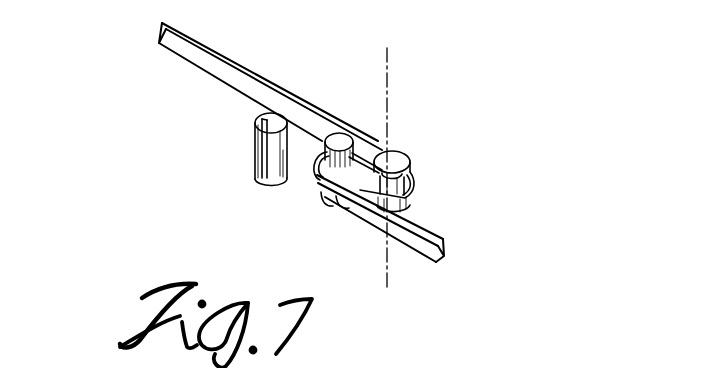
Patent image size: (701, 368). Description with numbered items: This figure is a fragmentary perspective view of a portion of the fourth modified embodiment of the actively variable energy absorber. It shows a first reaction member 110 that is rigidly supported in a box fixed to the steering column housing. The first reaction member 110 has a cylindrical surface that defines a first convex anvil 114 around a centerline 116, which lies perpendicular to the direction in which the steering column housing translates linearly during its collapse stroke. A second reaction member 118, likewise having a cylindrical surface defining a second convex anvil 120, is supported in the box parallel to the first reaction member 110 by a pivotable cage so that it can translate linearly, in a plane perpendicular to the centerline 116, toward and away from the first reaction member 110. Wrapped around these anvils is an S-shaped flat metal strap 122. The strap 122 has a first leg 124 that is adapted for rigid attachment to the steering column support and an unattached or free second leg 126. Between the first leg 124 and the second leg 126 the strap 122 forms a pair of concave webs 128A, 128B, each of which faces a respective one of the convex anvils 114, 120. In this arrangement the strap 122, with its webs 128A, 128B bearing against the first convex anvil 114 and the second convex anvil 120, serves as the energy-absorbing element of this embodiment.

The first reaction member 110 is at (405, 142).
The first convex anvil 114 is at (400, 178).
The centerline 116 is at (389, 67).
The second reaction member 118 is at (351, 136).
The second convex anvil 120 is at (324, 134).
The S-shaped flat metal strap 122 is at (251, 58).
The first leg 124 is at (427, 247).
The second leg 126 is at (162, 42).
The concave web 128A is at (406, 198).
The concave web 128B is at (300, 190).